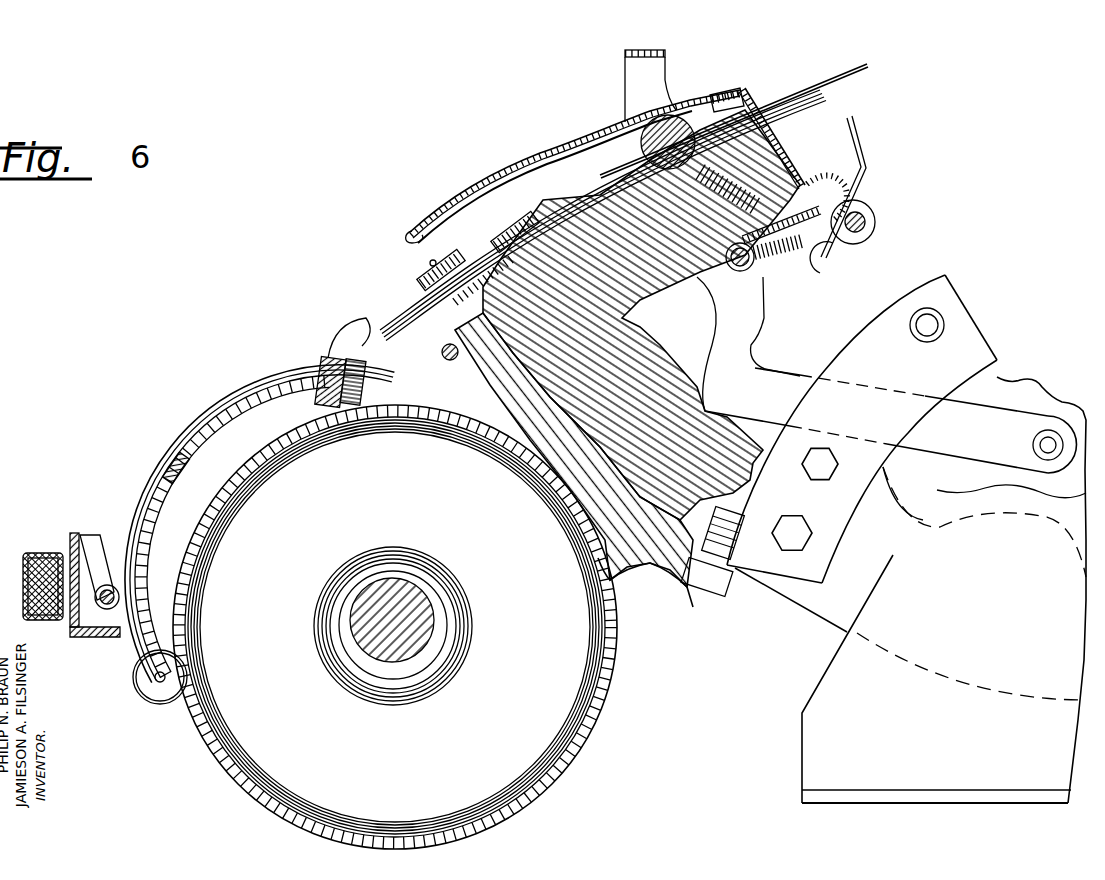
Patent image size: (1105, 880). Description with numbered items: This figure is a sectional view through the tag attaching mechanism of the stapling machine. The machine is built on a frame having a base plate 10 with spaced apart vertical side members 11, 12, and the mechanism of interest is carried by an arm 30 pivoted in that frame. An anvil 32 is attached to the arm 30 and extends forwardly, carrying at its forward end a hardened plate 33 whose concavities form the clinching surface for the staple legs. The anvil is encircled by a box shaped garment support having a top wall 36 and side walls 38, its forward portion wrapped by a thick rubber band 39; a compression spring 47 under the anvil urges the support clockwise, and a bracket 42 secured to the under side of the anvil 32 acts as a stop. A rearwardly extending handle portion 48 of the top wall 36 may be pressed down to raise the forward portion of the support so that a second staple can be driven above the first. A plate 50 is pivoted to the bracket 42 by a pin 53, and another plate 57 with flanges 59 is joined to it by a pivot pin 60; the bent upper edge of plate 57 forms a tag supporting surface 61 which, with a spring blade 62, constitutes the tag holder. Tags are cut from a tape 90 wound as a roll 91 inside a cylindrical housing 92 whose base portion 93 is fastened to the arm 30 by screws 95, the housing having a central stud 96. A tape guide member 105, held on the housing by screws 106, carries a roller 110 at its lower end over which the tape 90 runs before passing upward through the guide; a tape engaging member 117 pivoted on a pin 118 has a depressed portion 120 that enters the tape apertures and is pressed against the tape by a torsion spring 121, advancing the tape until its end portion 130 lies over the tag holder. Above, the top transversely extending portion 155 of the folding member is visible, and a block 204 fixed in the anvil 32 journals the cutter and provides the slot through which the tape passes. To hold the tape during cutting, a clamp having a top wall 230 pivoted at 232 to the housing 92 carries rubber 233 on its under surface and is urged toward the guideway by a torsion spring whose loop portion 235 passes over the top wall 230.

The base plate 10 is at (871, 805).
The side member 11 is at (944, 590).
The side member 12 is at (1008, 388).
The arm 30 is at (862, 453).
The anvil 32 is at (632, 308).
The hardened plate 33 is at (784, 146).
The top wall 36 is at (614, 128).
The side walls 38 is at (600, 164).
The rubber band 39 is at (730, 96).
The bracket 42 is at (697, 288).
The compression spring 47 is at (767, 198).
The handle portion 48 is at (448, 207).
The plate 50 is at (803, 224).
The pin 53 is at (737, 272).
The plate 57 is at (835, 252).
The flanges 59 is at (870, 206).
The pivot pin 60 is at (876, 224).
The tag supporting surface 61 is at (832, 171).
The spring blade 62 is at (858, 142).
The tape 90 is at (133, 672).
The roll 91 is at (320, 448).
The cylindrical housing 92 is at (603, 714).
The base portion 93 is at (727, 590).
The screws 95 is at (692, 590).
The stud 96 is at (428, 604).
The tape guide member 105 is at (236, 426).
The screws 106 is at (332, 384).
The roller 110 is at (150, 698).
The tape engaging member 117 is at (126, 528).
The pin 118 is at (110, 606).
The depressed portion 120 is at (170, 466).
The torsion spring 121 is at (100, 540).
The end portion 130 is at (781, 92).
The top transversely extending portion 155 is at (624, 52).
The block 204 is at (620, 170).
The top wall 230 is at (410, 290).
The pivot 232 is at (452, 356).
The rubber 233 is at (478, 246).
The loop portion 235 is at (436, 260).